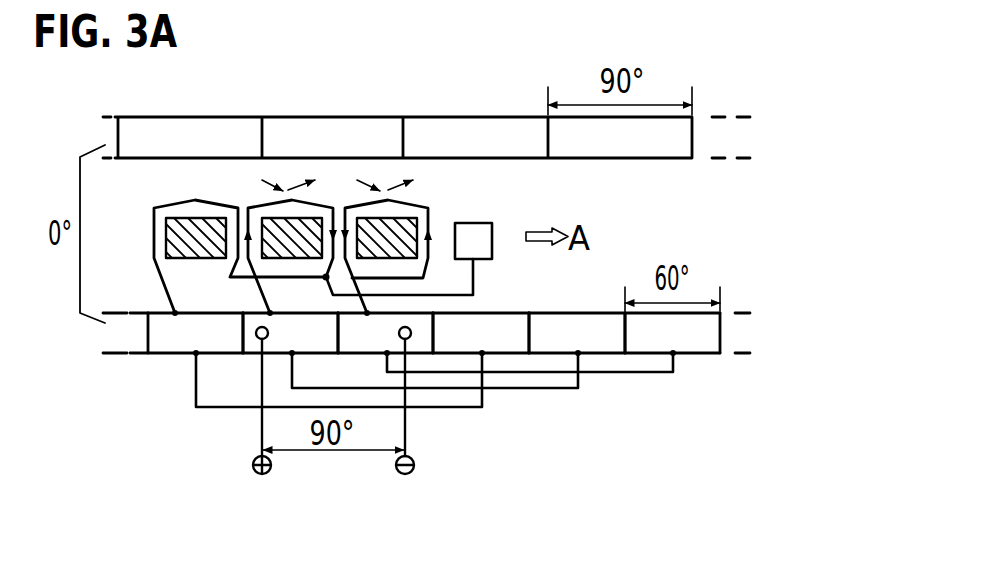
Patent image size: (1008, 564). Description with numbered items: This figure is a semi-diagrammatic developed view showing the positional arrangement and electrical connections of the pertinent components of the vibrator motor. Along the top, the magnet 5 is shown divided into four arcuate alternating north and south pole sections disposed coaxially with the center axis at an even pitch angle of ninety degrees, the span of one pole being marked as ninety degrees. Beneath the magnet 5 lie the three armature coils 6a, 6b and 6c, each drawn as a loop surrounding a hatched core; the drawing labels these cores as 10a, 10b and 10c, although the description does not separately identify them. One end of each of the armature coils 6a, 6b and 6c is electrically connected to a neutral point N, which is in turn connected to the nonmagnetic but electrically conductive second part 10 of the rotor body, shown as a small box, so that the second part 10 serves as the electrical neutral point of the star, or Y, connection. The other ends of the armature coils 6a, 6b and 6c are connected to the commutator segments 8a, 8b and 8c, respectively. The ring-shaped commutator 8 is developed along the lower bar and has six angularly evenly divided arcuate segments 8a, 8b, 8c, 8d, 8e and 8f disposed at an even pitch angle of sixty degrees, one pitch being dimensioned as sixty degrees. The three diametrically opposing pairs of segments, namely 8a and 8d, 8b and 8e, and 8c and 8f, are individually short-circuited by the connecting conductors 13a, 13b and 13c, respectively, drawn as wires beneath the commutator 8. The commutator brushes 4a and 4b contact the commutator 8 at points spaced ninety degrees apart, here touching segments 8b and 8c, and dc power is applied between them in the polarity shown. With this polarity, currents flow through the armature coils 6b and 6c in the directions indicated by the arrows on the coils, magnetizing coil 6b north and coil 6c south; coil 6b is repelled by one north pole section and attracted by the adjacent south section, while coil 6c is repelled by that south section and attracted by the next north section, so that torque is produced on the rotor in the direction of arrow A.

The magnet 5 is at (462, 113).
The armature coil 6a is at (193, 205).
The armature coil 6b is at (342, 197).
The armature coil 6c is at (427, 206).
The stator core (pole piece) 10a is at (202, 233).
The stator core (pole piece) 10b is at (283, 233).
The stator core (pole piece) 10c is at (377, 233).
The second part of the rotor body 10 is at (482, 223).
The commutator 8 is at (698, 354).
The commutator segment 8a is at (195, 333).
The commutator segment 8b is at (290, 333).
The commutator segment 8c is at (385, 333).
The commutator segment 8d is at (481, 333).
The commutator segment 8e is at (577, 333).
The commutator segment 8f is at (672, 333).
The connecting conductor 13a is at (452, 407).
The connecting conductor 13b is at (552, 388).
The connecting conductor 13c is at (658, 372).
The commutator brush 4a is at (260, 427).
The commutator brush 4b is at (406, 432).
The neutral point N is at (326, 277).